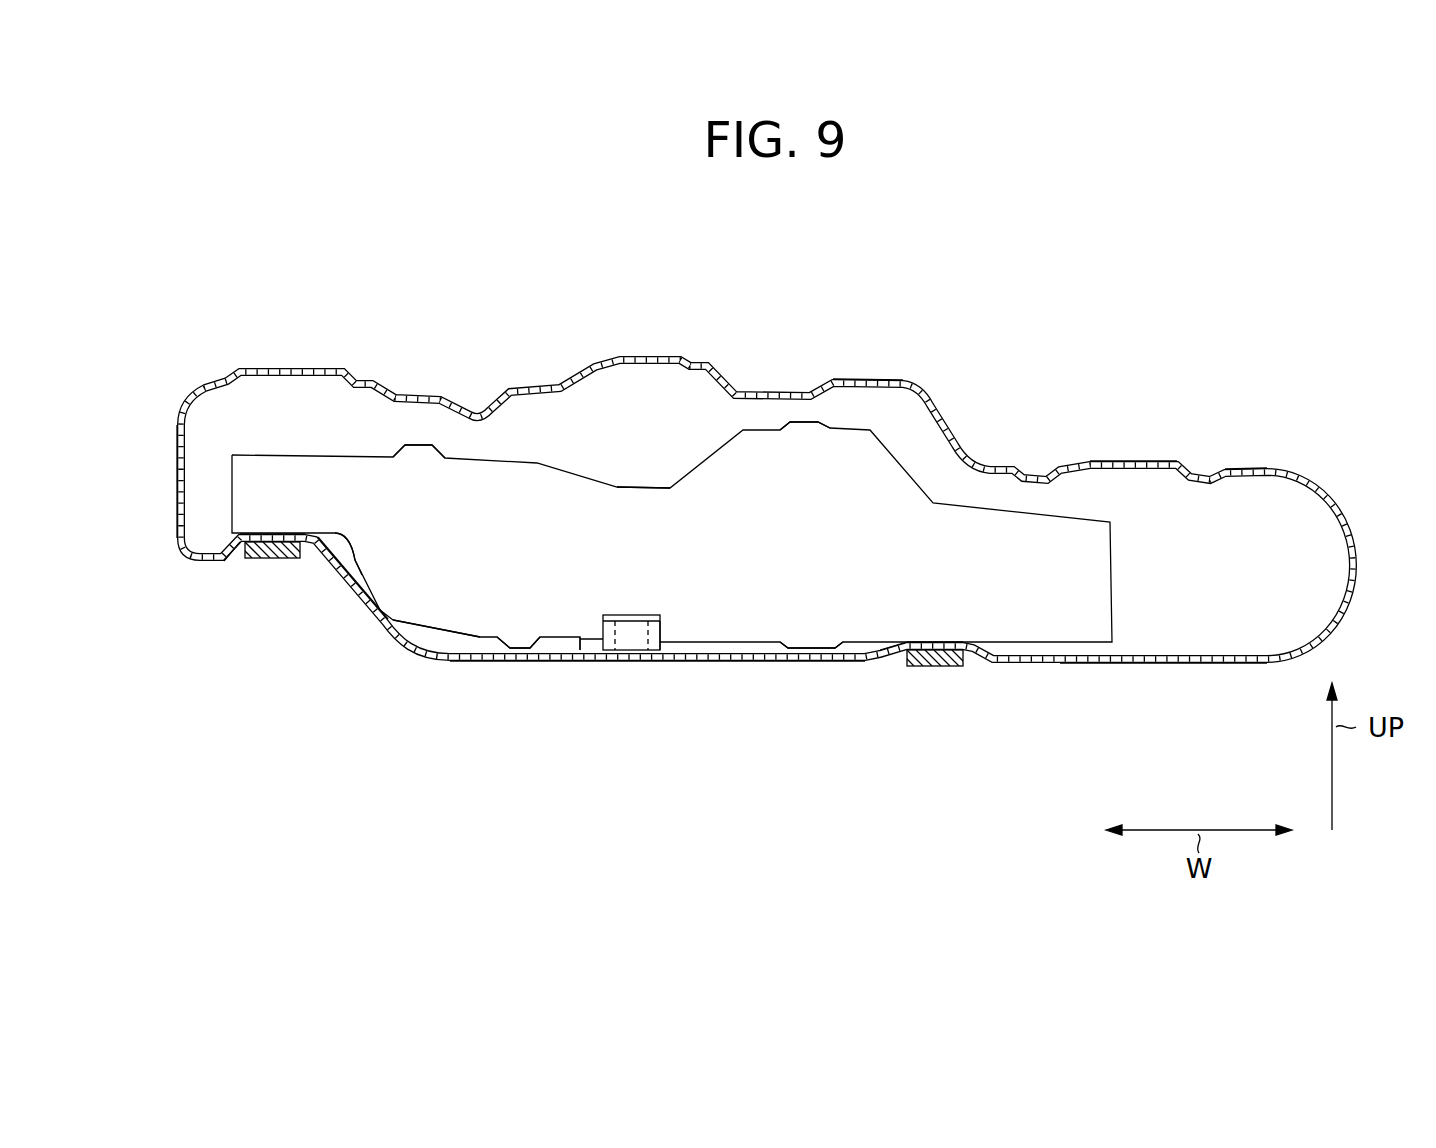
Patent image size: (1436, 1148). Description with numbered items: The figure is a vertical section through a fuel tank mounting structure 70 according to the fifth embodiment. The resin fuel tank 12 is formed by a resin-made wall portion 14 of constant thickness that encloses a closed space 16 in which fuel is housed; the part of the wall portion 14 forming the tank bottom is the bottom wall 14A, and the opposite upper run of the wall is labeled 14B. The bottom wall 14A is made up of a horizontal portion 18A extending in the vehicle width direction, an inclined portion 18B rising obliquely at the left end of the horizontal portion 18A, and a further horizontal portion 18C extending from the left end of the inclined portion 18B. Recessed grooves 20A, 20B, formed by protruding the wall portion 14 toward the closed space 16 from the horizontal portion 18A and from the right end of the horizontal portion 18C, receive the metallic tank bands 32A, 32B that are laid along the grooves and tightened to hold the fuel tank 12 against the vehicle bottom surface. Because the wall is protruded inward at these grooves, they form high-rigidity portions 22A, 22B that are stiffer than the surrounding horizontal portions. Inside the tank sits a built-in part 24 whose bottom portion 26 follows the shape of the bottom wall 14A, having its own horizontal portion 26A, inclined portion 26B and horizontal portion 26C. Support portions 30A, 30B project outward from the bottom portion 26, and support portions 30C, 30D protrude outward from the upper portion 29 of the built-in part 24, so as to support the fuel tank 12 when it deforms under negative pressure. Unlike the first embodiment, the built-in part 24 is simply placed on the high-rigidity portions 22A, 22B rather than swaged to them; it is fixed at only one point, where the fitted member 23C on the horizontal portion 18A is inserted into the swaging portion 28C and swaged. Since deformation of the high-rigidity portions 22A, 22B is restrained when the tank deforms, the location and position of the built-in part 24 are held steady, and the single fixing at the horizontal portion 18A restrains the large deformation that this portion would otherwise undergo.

The fuel tank mounting structure 70 is at (1107, 300).
The resin fuel tank 12 is at (1130, 463).
The wall portion 14 is at (1273, 468).
The bottom wall 14A is at (1143, 663).
The upper wall of outer panel 14B is at (884, 380).
The closed space 16 is at (1196, 579).
The horizontal portion 18A is at (750, 661).
The inclined portion 18B is at (344, 597).
The horizontal portion 18C is at (204, 561).
The recessed groove 20A is at (896, 655).
The recessed groove 20B is at (240, 560).
The high-rigidity portion 22A is at (930, 641).
The high-rigidity portion 22B is at (270, 533).
The fitted member 23C is at (660, 632).
The built-in part 24 is at (538, 463).
The bottom portion 26 is at (724, 642).
The horizontal portion 26A is at (581, 652).
The inclined portion 26B is at (410, 638).
The horizontal portion 26C is at (348, 552).
The swaging portion 28C is at (634, 614).
The upper portion 29 is at (633, 486).
The support portion 30A is at (810, 650).
The support portion 30B is at (530, 652).
The support portion 30C is at (806, 422).
The support portion 30D is at (412, 445).
The tank band 32A is at (935, 668).
The tank band 32B is at (280, 559).